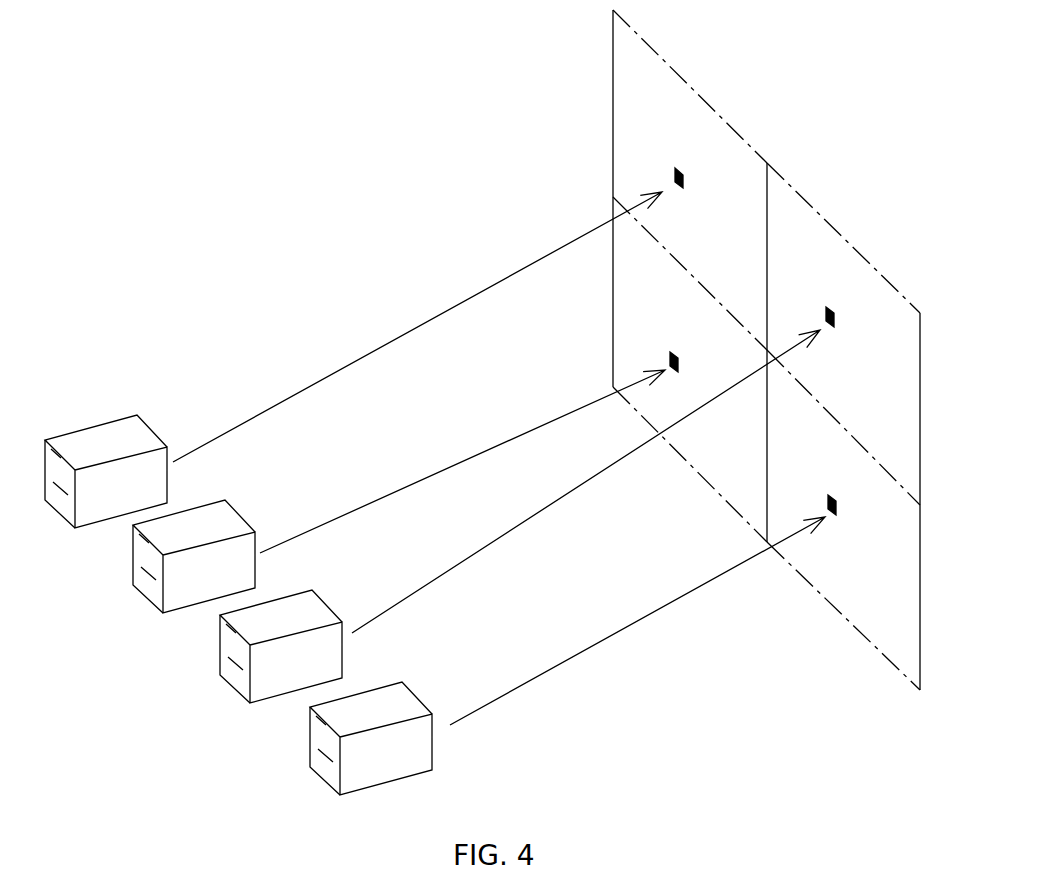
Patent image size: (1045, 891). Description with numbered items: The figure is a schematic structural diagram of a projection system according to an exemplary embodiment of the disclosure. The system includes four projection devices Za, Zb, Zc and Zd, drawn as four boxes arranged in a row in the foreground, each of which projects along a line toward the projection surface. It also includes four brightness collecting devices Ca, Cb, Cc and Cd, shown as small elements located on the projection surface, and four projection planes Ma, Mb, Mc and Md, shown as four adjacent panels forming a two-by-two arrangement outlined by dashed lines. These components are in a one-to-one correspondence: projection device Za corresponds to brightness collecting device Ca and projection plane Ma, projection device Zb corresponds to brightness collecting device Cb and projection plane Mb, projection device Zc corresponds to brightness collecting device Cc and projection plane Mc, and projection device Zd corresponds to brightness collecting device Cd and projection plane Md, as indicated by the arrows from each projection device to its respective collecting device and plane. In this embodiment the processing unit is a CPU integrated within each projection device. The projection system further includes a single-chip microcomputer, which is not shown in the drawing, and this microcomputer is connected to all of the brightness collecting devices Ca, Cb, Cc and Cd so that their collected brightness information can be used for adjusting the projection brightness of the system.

The projection device Za is at (106, 471).
The projection device Zb is at (281, 646).
The projection device Zc is at (194, 556).
The projection device Zd is at (371, 738).
The brightness collecting device Ca is at (679, 167).
The brightness collecting device Cb is at (830, 307).
The brightness collecting device Cc is at (673, 352).
The brightness collecting device Cd is at (833, 495).
The projection plane Ma is at (690, 180).
The projection plane Mb is at (843, 334).
The projection plane Mc is at (690, 369).
The projection plane Md is at (843, 595).